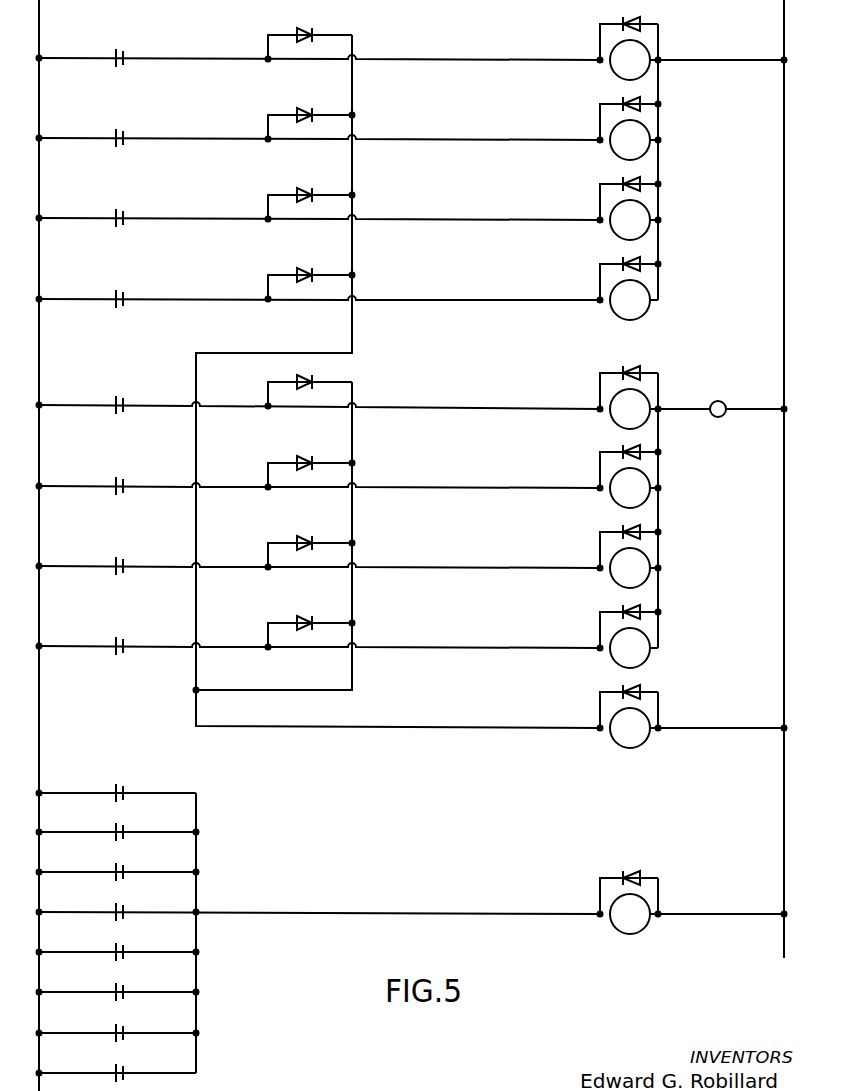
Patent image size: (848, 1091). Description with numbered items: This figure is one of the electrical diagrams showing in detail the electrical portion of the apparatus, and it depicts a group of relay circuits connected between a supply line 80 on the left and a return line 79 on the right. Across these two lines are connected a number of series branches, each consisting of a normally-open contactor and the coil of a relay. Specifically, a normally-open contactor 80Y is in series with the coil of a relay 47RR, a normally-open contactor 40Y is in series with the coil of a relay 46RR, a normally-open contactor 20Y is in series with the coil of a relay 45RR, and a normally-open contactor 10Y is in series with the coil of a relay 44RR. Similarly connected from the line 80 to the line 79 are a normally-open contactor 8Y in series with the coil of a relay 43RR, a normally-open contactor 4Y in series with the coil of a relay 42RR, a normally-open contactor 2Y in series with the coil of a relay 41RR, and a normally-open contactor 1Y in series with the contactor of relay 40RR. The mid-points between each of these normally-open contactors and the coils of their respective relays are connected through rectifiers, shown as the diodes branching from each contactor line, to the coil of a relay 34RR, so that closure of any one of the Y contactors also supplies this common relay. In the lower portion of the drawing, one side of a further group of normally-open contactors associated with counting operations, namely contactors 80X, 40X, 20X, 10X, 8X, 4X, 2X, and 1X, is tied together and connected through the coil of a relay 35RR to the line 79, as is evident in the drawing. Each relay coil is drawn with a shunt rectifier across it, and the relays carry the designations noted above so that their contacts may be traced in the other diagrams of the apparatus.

The line 80 is at (40, 21).
The line 79 is at (784, 37).
The normally-open contactor 80Y is at (124, 55).
The normally-open contactor 40Y is at (124, 135).
The normally-open contactor 20Y is at (124, 215).
The normally-open contactor 10Y is at (124, 296).
The normally-open contactor 8Y is at (124, 402).
The normally-open contactor 4Y is at (124, 483).
The normally-open contactor 2Y is at (124, 563).
The normally-open contactor 1Y is at (124, 643).
The normally-open contactor 80X is at (124, 790).
The normally-open contactor 40X is at (124, 829).
The normally-open contactor 20X is at (124, 869).
The normally-open contactor 10X is at (124, 909).
The normally-open contactor 8X is at (124, 949).
The normally-open contactor 4X is at (124, 989).
The normally-open contactor 2X is at (124, 1030).
The normally-open contactor 1X is at (124, 1070).
The relay 47RR is at (640, 52).
The relay 46RR is at (640, 132).
The relay 45RR is at (640, 212).
The relay 44RR is at (640, 292).
The relay 43RR is at (640, 401).
The relay 42RR is at (640, 480).
The relay 41RR is at (640, 560).
The relay 40RR is at (640, 640).
The relay 34RR is at (640, 720).
The relay 35RR is at (640, 906).